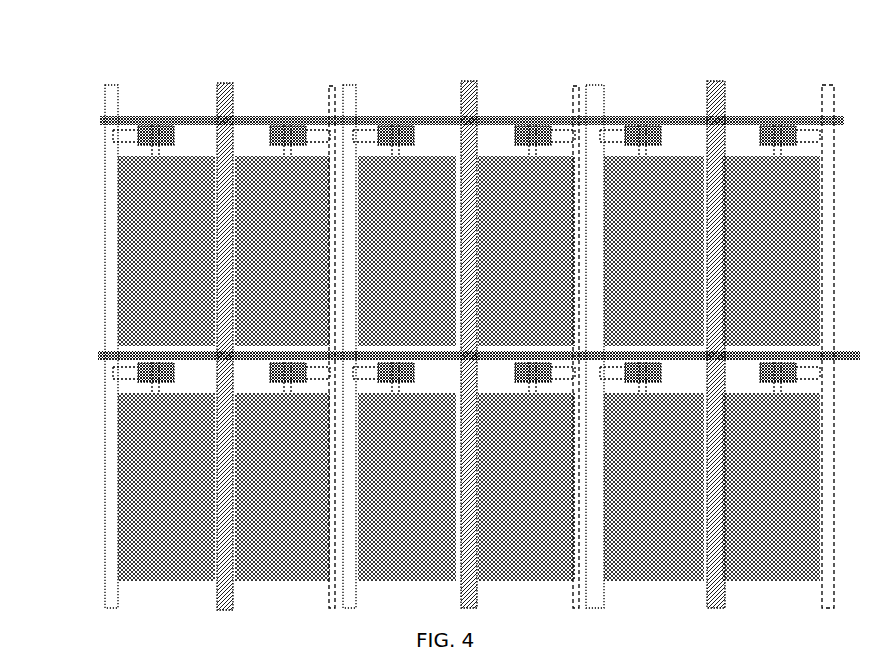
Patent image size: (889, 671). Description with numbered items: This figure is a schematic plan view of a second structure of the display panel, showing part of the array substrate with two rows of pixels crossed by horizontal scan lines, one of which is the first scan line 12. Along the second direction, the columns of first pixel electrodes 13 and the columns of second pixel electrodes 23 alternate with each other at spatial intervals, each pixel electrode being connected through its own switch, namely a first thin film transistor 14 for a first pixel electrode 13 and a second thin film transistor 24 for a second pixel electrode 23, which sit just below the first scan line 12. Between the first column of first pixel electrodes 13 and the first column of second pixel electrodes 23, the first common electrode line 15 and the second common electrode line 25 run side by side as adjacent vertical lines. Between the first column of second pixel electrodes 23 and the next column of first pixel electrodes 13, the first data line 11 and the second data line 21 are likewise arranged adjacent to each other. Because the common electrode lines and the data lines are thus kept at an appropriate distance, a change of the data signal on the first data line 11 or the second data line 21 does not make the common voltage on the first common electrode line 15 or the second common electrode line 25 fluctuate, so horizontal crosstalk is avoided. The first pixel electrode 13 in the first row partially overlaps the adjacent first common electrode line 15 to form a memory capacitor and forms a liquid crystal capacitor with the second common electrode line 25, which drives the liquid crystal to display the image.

The first data line 11 is at (110, 78).
The first scan line 12 is at (92, 112).
The first pixel electrode 13 is at (112, 188).
The first thin film transistor 14 is at (110, 134).
The first common electrode line 15 is at (213, 77).
The second data line 21 is at (325, 80).
The second pixel electrode 23 is at (487, 150).
The second thin film transistor 24 is at (262, 113).
The second common electrode line 25 is at (462, 77).